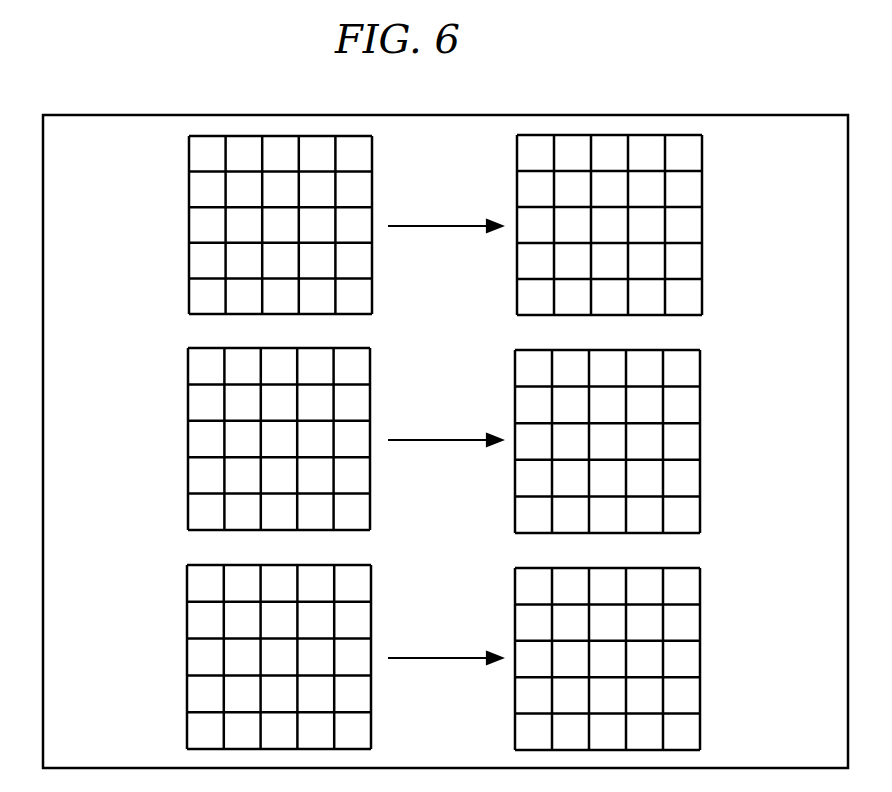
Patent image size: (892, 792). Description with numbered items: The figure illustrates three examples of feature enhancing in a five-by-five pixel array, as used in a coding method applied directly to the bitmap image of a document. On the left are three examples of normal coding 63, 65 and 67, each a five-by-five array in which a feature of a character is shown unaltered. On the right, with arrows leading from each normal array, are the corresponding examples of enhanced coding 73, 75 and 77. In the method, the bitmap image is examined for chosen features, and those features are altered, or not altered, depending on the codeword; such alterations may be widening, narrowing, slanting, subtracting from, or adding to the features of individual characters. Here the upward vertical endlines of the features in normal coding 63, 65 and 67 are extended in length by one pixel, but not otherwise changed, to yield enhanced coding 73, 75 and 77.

The normal coding 63 is at (246, 225).
The normal coding 65 is at (242, 439).
The normal coding 67 is at (243, 657).
The enhanced coding 73 is at (646, 225).
The enhanced coding 75 is at (642, 441).
The enhanced coding 77 is at (644, 659).